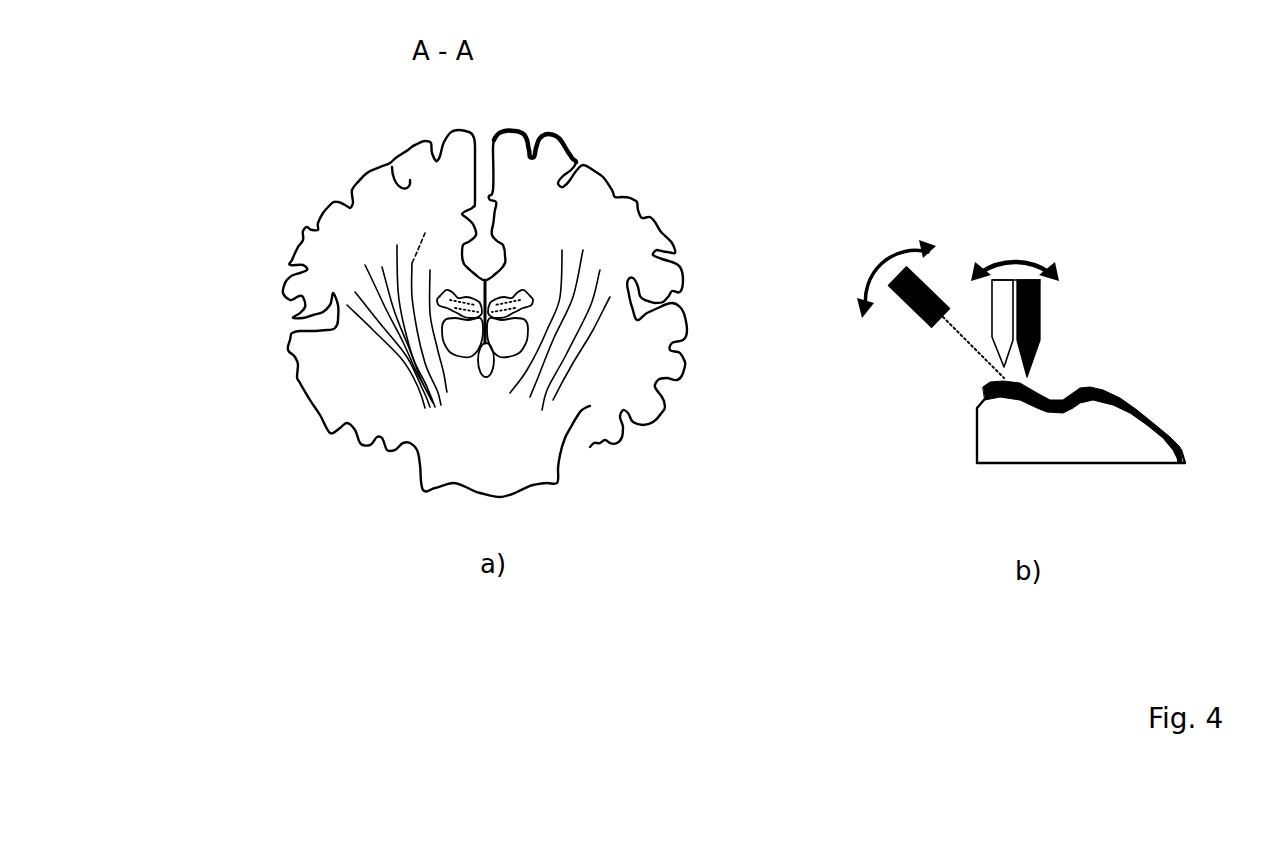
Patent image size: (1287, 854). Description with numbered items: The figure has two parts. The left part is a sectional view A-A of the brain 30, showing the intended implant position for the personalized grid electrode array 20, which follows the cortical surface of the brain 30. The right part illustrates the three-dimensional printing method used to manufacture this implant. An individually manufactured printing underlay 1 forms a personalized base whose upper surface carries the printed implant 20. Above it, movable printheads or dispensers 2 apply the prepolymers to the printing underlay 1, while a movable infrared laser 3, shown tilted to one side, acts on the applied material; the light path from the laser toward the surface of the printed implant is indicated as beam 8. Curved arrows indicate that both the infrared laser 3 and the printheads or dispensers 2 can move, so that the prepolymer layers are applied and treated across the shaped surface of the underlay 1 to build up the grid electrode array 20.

The personalized grid electrode array 20 is at (555, 133).
The brain 30 is at (531, 472).
The movable infrared laser 3 is at (900, 306).
The illumination beam 8 is at (957, 340).
The movable printheads/dispensers 2 is at (1040, 318).
The individually manufactured printing underlay 1 is at (1015, 443).